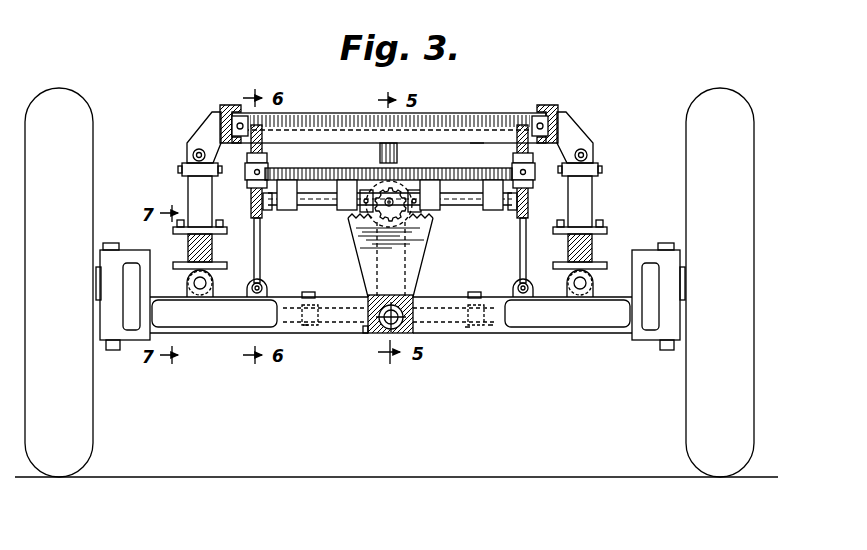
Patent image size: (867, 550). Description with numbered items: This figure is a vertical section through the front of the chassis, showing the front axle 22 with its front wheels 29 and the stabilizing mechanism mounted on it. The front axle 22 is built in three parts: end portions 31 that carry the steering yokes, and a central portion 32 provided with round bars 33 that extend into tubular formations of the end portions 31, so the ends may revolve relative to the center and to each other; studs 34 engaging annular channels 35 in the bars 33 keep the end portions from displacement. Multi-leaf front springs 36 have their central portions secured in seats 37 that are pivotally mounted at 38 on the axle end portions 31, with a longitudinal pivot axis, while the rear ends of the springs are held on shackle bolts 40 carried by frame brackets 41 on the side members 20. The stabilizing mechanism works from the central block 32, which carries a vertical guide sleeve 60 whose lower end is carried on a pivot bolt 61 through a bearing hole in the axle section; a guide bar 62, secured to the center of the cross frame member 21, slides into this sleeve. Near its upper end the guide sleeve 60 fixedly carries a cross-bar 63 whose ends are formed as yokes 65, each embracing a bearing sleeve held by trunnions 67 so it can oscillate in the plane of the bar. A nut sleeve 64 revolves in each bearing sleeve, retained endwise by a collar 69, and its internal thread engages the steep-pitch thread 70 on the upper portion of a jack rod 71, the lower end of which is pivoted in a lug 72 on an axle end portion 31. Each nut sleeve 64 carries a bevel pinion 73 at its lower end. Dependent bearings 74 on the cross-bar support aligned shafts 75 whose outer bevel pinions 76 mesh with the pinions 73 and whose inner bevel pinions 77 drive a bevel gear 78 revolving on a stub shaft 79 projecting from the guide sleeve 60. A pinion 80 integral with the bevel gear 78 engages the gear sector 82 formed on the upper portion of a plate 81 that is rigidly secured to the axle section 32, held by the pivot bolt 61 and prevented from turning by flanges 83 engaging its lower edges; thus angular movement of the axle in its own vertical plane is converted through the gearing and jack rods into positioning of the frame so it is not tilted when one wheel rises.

The side members 20 is at (233, 115).
The cross frame member 21 is at (311, 125).
The front axle 22 is at (478, 333).
The front wheels 29 is at (75, 112).
The axle end portions 31 is at (212, 330).
The central axle portion 32 is at (375, 335).
The round bars 33 is at (318, 325).
The studs 34 is at (305, 327).
The annular channels 35 is at (305, 325).
The front springs 36 is at (198, 196).
The spring seats 37 is at (183, 250).
The seat pivot 38 is at (206, 283).
The shackle bolts 40 is at (181, 170).
The frame brackets 41 is at (200, 133).
The vertical guide sleeve 60 is at (412, 262).
The pivot bolt 61 is at (384, 330).
The guide bar 62 is at (389, 143).
The cross-bar 63 is at (477, 142).
The nut sleeve 64 is at (260, 160).
The yokes 65 is at (249, 175).
The trunnions 67 is at (250, 166).
The collar 69 is at (240, 108).
The thread 70 is at (252, 130).
The jack rod 71 is at (261, 263).
The lug 72 is at (249, 295).
The pinion 73 is at (251, 190).
The dependent bearings 74 is at (292, 187).
The aligned shafts 75 is at (321, 206).
The bevel pinions 76 is at (270, 212).
The bevel pinions 77 is at (347, 178).
The bevel gear 78 is at (292, 150).
The stub shaft 79 is at (430, 148).
The pinion 80 is at (410, 222).
The plate 81 is at (368, 262).
The gear sector 82 is at (352, 222).
The flanges 83 is at (367, 335).